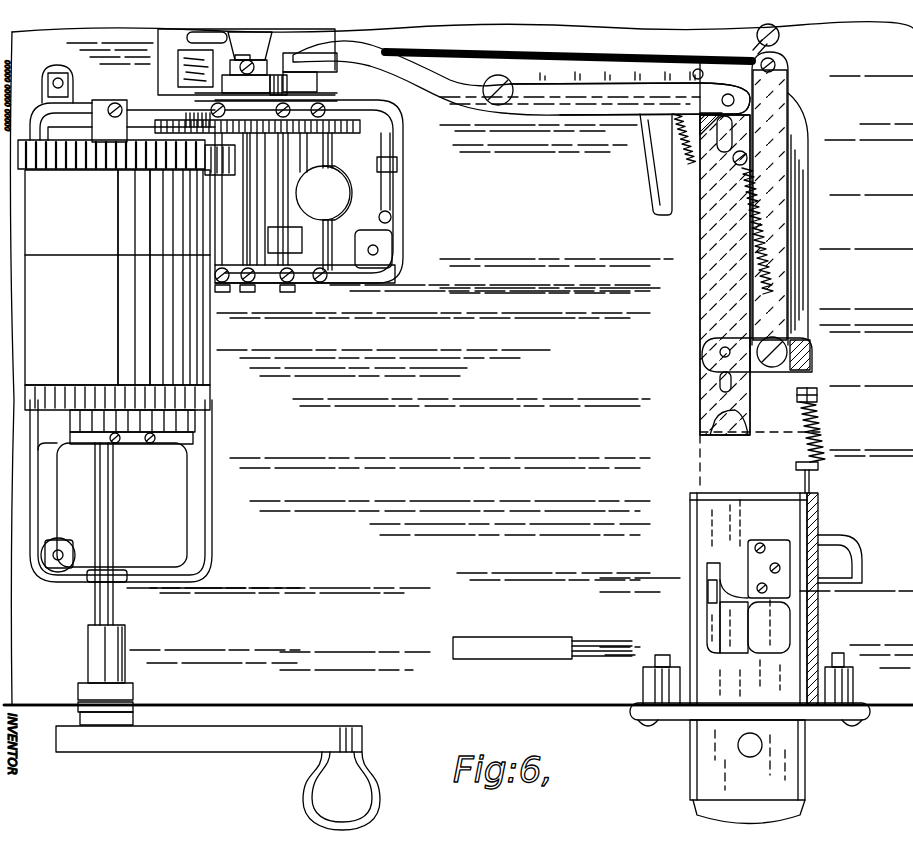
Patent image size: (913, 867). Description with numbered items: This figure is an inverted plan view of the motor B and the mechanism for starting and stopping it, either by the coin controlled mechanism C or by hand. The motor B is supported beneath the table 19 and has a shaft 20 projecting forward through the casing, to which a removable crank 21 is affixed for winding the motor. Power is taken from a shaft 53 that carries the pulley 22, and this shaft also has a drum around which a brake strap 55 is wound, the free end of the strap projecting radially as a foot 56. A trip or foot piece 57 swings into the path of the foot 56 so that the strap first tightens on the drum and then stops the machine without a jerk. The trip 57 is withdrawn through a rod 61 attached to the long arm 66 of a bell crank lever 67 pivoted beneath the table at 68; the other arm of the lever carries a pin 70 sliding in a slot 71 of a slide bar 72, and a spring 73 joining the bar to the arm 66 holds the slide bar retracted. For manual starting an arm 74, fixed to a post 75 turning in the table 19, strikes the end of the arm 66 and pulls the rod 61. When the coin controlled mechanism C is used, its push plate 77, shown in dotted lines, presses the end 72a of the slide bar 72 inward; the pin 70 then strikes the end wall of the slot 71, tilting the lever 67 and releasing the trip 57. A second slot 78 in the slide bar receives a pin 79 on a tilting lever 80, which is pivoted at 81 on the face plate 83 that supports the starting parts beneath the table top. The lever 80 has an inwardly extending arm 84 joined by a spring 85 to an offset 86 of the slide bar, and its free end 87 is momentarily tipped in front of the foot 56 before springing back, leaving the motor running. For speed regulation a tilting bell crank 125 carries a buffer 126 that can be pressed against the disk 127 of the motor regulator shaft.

The table 19 is at (413, 697).
The shaft 20 is at (100, 605).
The removable crank 21 is at (197, 748).
The pulley 22 is at (160, 88).
The shaft 53 is at (247, 208).
The brake strap 55 is at (177, 75).
The protruding end of brake strap 56 is at (323, 92).
The trip or foot piece 57 is at (313, 70).
The rod 61 is at (653, 65).
The long arm of bell crank lever 66 is at (775, 225).
The bell crank lever 67 is at (808, 345).
The pivot 68 is at (787, 360).
The pin 70 is at (710, 360).
The slot 71 is at (720, 382).
The slide bar 72 is at (740, 312).
The end of slide bar 72a is at (707, 437).
The spring 73 is at (767, 257).
The arm 74 is at (758, 60).
The post 75 is at (782, 42).
The push plate 77 is at (700, 462).
The second slot 78 is at (735, 132).
The pin 79 is at (730, 100).
The tilting lever 80 is at (562, 105).
The pivot 81 is at (505, 73).
The face plate 83 is at (617, 73).
The inwardly extending arm 84 is at (650, 160).
The spring 85 is at (684, 148).
The offset 86 is at (698, 69).
The free end of lever 87 is at (300, 56).
The tilting bell crank 125 is at (387, 210).
The buffer 126 is at (397, 167).
The disk 127 is at (363, 117).
The motor B is at (189, 276).
The coin controlled mechanism C is at (776, 599).